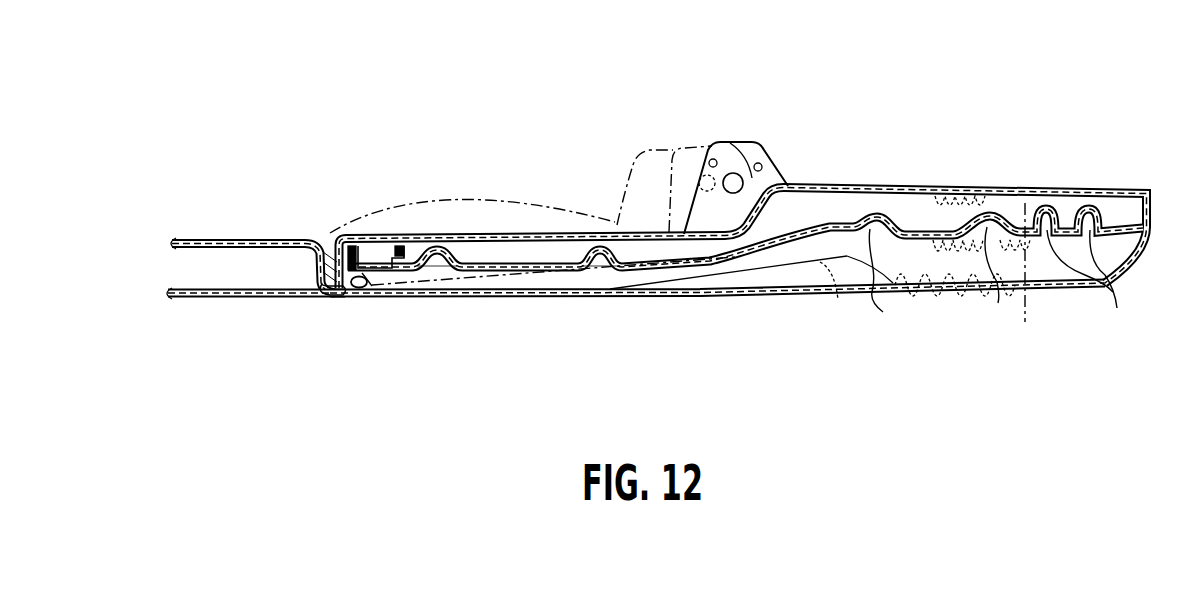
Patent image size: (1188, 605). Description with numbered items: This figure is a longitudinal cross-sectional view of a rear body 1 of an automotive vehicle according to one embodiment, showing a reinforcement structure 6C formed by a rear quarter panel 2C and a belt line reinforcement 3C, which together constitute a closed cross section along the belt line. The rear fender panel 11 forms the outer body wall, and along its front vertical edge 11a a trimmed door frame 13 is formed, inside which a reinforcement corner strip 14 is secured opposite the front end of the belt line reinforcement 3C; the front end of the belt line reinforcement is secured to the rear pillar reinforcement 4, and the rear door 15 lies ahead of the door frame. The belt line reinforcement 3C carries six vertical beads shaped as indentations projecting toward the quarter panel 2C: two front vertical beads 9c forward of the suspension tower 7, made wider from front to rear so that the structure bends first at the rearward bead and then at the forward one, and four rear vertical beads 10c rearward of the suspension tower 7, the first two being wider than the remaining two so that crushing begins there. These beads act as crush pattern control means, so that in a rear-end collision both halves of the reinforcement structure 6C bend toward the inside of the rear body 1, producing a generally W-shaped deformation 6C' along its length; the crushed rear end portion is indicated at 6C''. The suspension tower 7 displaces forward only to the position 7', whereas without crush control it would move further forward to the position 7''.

The rear body 1 is at (498, 298).
The rear quarter panel 2C is at (910, 190).
The belt line reinforcement 3C is at (758, 250).
The rear pillar reinforcement 4 is at (373, 248).
The reinforcement structure 6C is at (532, 227).
The W-shaped deformation 6C' is at (906, 298).
The crushed rear end portion of reinforcement structure 6C'' is at (1001, 276).
The suspension tower 7 is at (736, 154).
The displaced suspension tower position 7' is at (690, 148).
The displaced suspension tower position without crush control 7'' is at (625, 155).
The front vertical beads 9c is at (437, 265).
The rear vertical beads 10c is at (874, 297).
The rear fender panel 11 is at (714, 300).
The front vertical edge 11a is at (320, 246).
The trimmed door frame 13 is at (340, 297).
The reinforcement corner strip 14 is at (353, 300).
The rear door 15 is at (217, 295).